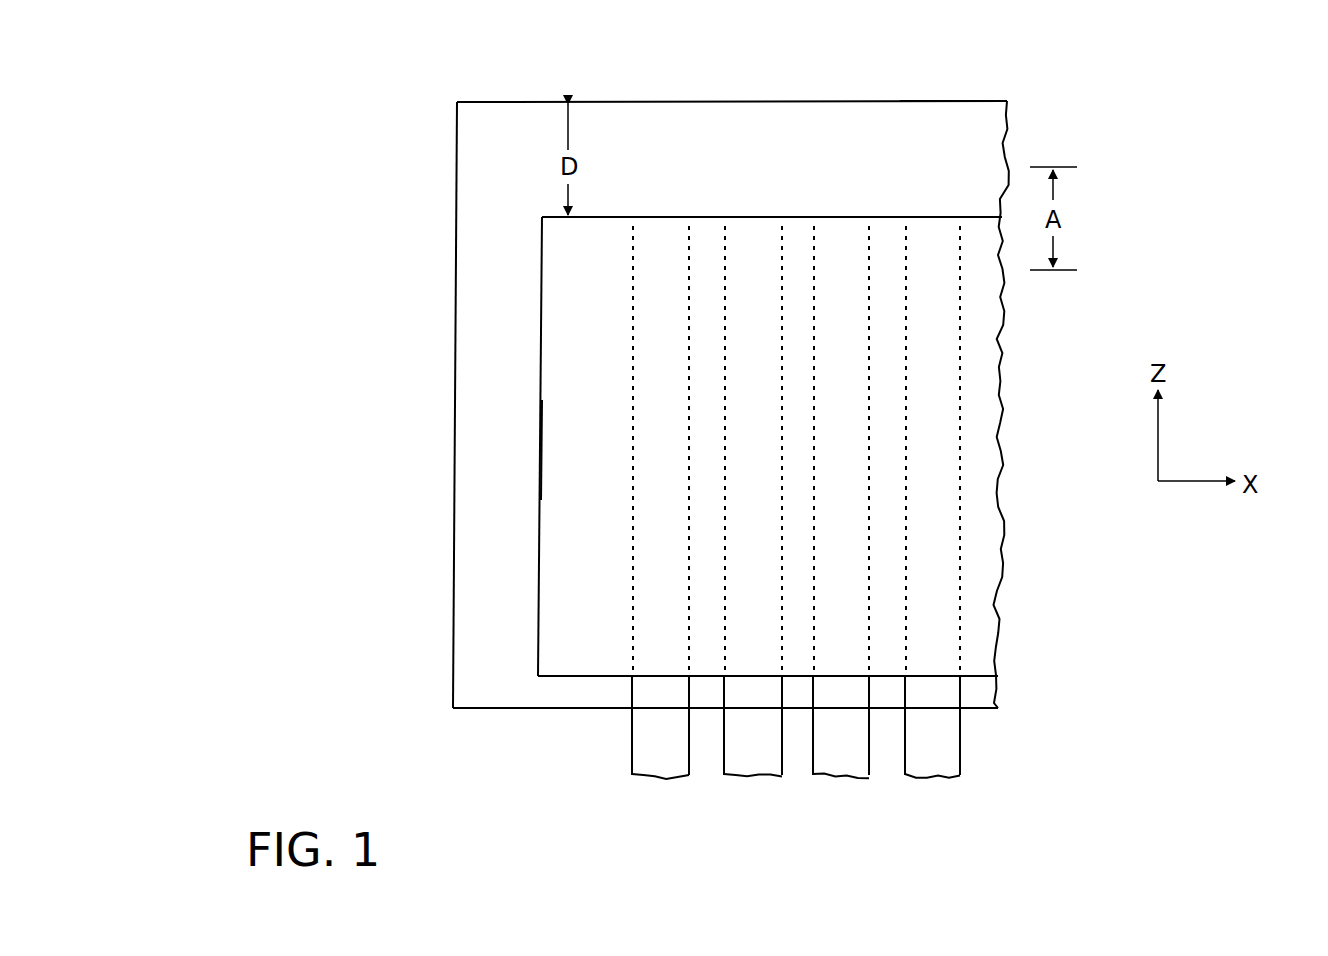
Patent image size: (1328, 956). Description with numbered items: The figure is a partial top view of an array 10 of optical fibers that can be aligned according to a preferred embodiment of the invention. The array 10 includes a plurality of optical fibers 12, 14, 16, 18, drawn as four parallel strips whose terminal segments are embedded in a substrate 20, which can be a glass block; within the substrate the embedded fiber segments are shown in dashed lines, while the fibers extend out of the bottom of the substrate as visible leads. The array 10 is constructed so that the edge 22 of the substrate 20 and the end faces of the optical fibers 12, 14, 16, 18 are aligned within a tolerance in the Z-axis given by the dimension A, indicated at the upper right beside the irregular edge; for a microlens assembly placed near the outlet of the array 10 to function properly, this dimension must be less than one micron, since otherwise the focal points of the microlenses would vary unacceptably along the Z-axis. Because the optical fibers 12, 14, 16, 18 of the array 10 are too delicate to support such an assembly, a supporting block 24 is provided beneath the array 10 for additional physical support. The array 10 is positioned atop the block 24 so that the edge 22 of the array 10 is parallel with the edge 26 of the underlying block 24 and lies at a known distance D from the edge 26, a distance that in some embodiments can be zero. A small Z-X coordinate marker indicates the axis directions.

The array 10 is at (562, 455).
The optical fiber 12 is at (632, 755).
The optical fiber 14 is at (758, 778).
The optical fiber 16 is at (845, 778).
The optical fiber 18 is at (960, 758).
The substrate 20 is at (985, 601).
The edge 22 is at (616, 217).
The supporting block 24 is at (457, 162).
The edge 26 is at (940, 101).